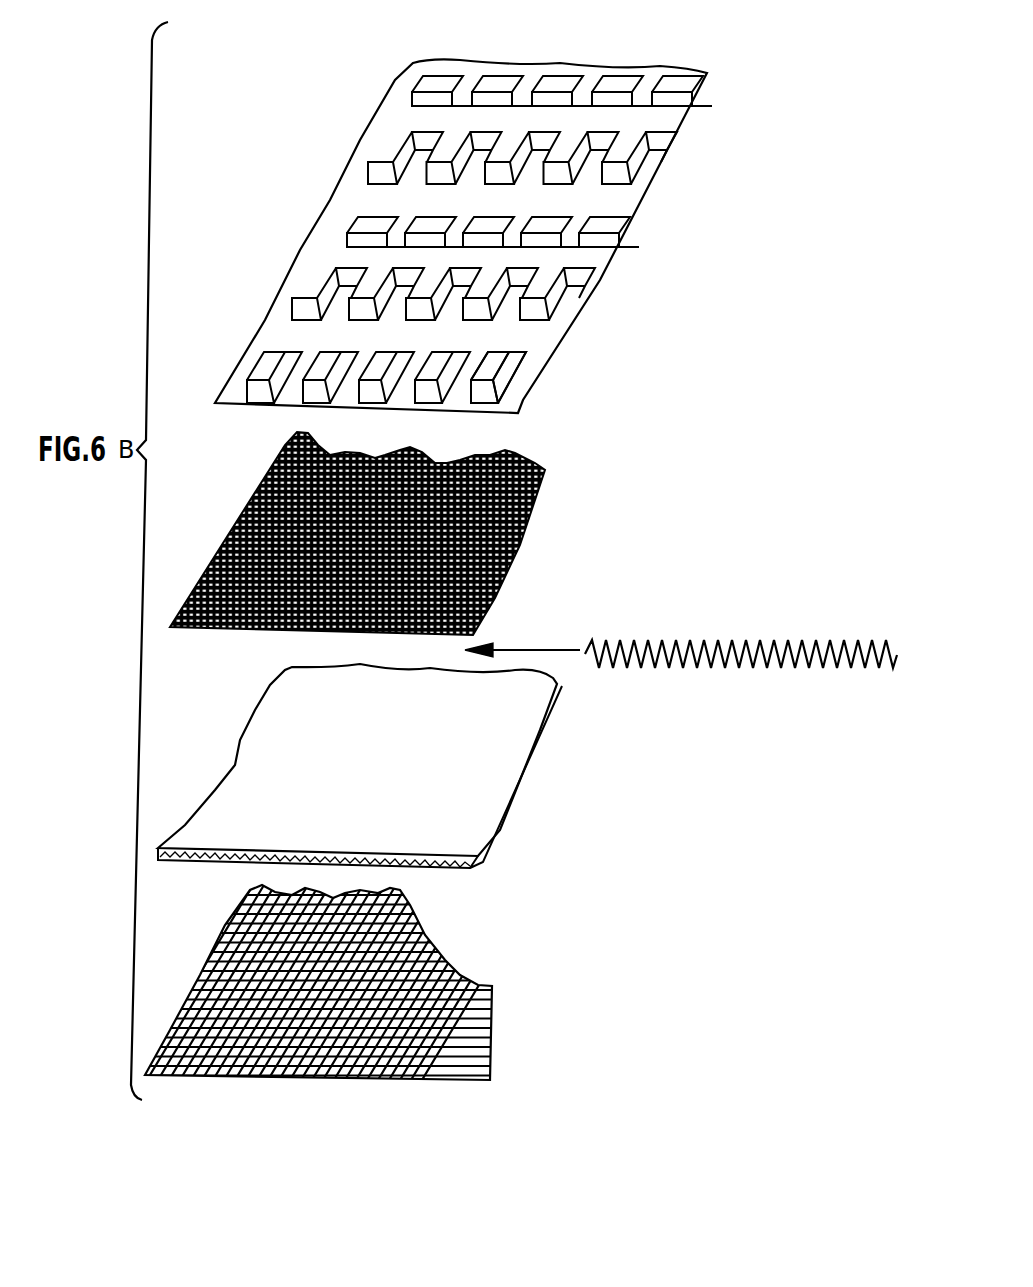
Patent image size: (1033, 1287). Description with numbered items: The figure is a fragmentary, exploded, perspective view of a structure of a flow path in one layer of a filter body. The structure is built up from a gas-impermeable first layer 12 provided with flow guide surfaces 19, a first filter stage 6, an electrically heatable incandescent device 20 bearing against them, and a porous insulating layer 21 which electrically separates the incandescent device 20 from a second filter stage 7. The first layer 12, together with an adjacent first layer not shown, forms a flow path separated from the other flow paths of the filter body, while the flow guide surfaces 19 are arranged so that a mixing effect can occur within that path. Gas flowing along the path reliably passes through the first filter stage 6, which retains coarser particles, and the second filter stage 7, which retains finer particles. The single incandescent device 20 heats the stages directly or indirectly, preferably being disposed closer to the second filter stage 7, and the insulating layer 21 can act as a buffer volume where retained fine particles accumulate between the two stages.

The first layer 12 is at (590, 270).
The flow guide surfaces 19 is at (505, 378).
The second filter stage 7 is at (522, 548).
The incandescent device 20 is at (698, 642).
The insulating layer 21 is at (520, 772).
The first filter stage 6 is at (468, 985).